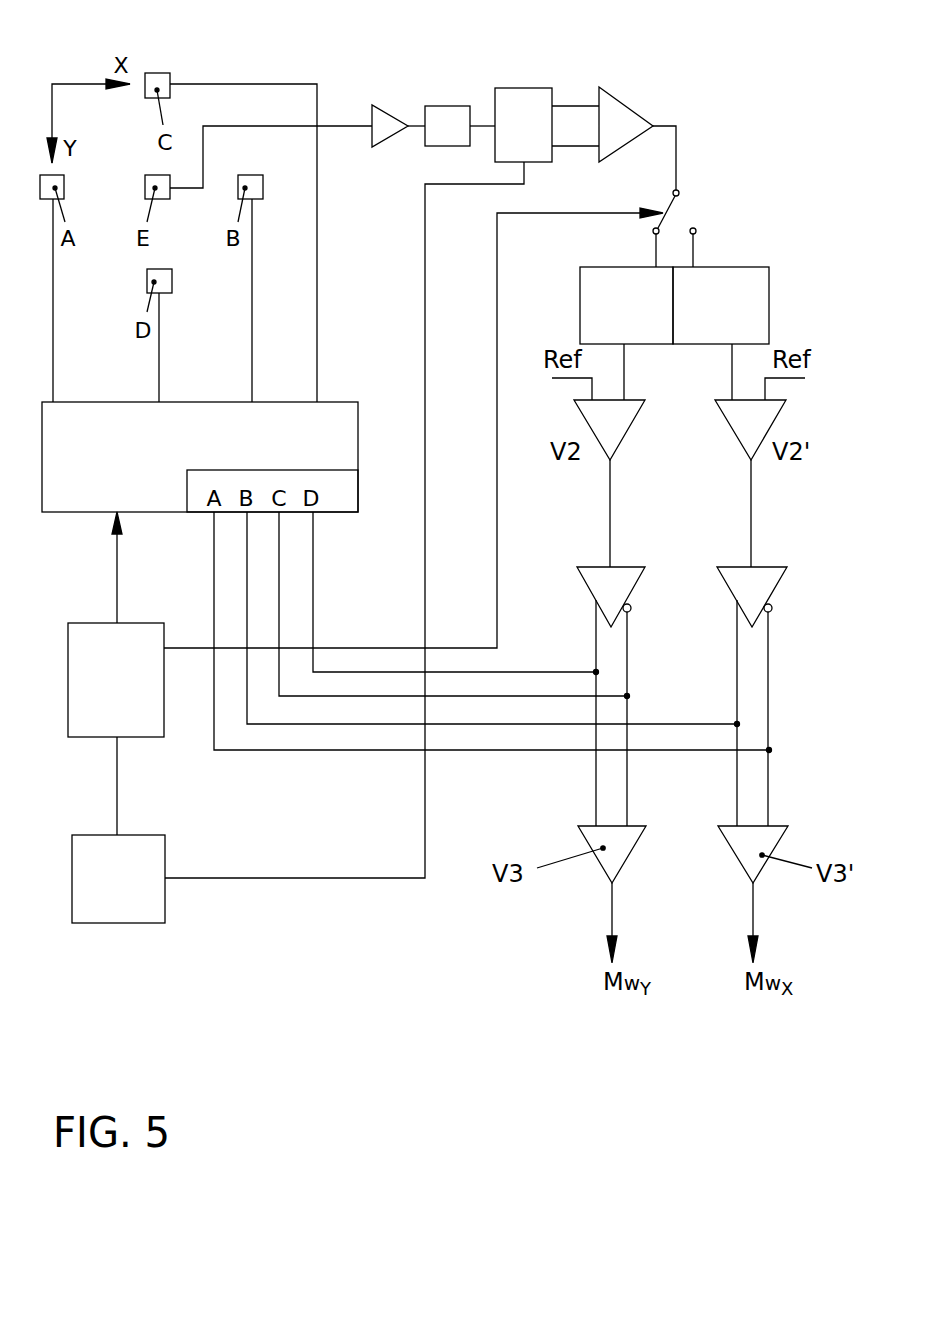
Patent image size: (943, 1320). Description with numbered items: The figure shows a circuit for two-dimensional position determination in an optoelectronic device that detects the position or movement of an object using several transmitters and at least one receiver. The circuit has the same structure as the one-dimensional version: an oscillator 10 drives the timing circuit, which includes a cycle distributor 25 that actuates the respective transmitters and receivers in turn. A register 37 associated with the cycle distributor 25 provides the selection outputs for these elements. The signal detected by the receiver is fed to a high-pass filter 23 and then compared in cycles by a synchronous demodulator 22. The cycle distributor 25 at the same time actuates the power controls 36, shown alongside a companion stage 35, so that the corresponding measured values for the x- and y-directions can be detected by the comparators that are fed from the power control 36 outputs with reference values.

The oscillator 10 is at (102, 892).
The synchronous demodulator 22 is at (508, 115).
The high-pass filter 23 is at (447, 116).
The cycle distributor 25 is at (262, 453).
The sample and hold stage 35 is at (591, 313).
The power control 36 is at (723, 286).
The selector output register 37 is at (219, 470).